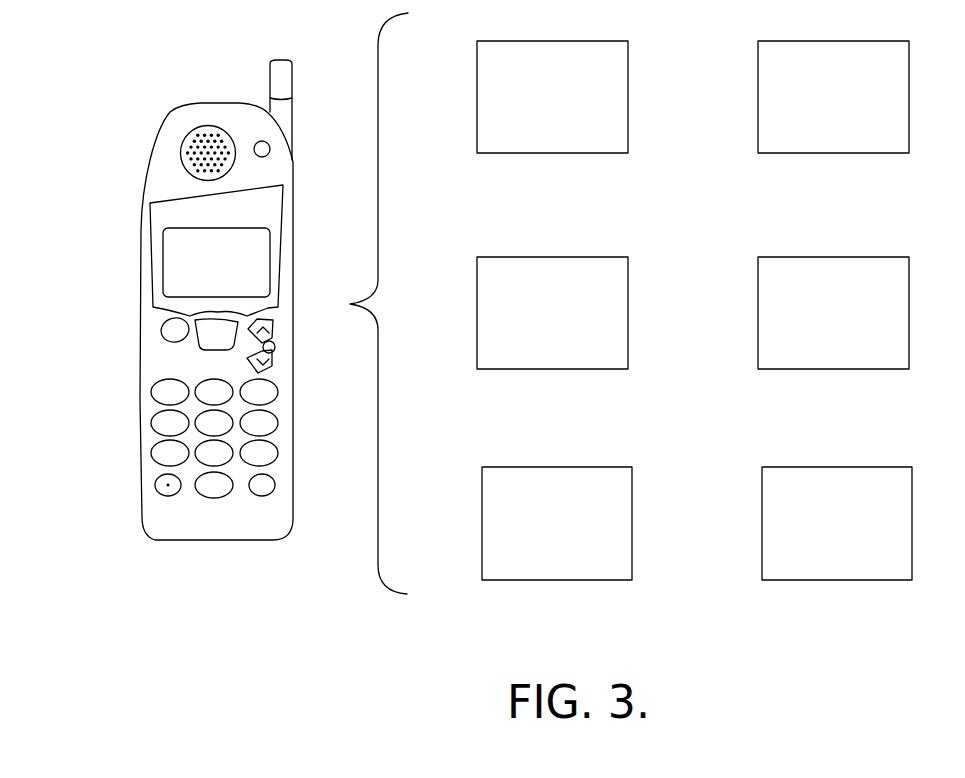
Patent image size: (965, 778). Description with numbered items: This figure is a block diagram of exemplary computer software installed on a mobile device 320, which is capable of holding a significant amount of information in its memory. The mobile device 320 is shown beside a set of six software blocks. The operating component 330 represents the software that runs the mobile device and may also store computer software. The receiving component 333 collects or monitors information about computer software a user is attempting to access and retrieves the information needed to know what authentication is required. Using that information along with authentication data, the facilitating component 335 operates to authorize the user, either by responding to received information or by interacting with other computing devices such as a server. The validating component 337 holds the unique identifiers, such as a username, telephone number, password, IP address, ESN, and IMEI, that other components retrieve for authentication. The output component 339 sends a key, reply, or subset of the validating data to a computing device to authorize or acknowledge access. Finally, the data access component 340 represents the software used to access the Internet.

The mobile device 320 is at (208, 540).
The operating component 330 is at (628, 98).
The receiving component 333 is at (909, 98).
The facilitating component 335 is at (628, 313).
The validating component 337 is at (909, 313).
The output component 339 is at (632, 524).
The data access component 340 is at (912, 524).